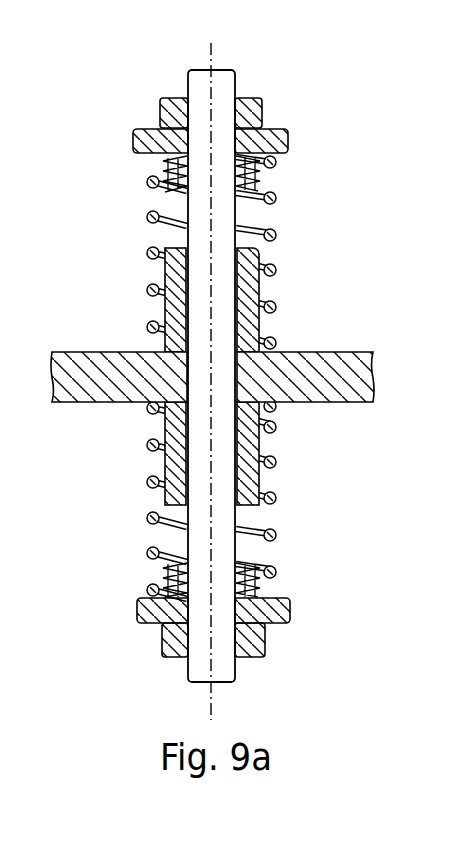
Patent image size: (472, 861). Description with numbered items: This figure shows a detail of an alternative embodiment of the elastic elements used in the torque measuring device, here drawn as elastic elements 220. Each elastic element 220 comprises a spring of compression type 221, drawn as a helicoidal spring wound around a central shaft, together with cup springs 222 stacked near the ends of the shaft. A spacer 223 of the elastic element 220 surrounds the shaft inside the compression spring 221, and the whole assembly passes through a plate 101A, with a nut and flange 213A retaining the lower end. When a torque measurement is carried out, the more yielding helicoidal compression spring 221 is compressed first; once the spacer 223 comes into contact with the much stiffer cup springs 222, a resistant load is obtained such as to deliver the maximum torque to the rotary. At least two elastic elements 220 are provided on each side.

The elastic elements 220 is at (155, 74).
The plate 101A is at (108, 382).
The spacer 223 is at (245, 435).
The springs of compression type 221 is at (276, 501).
The cup springs 222 is at (267, 587).
The nut 213A is at (157, 624).